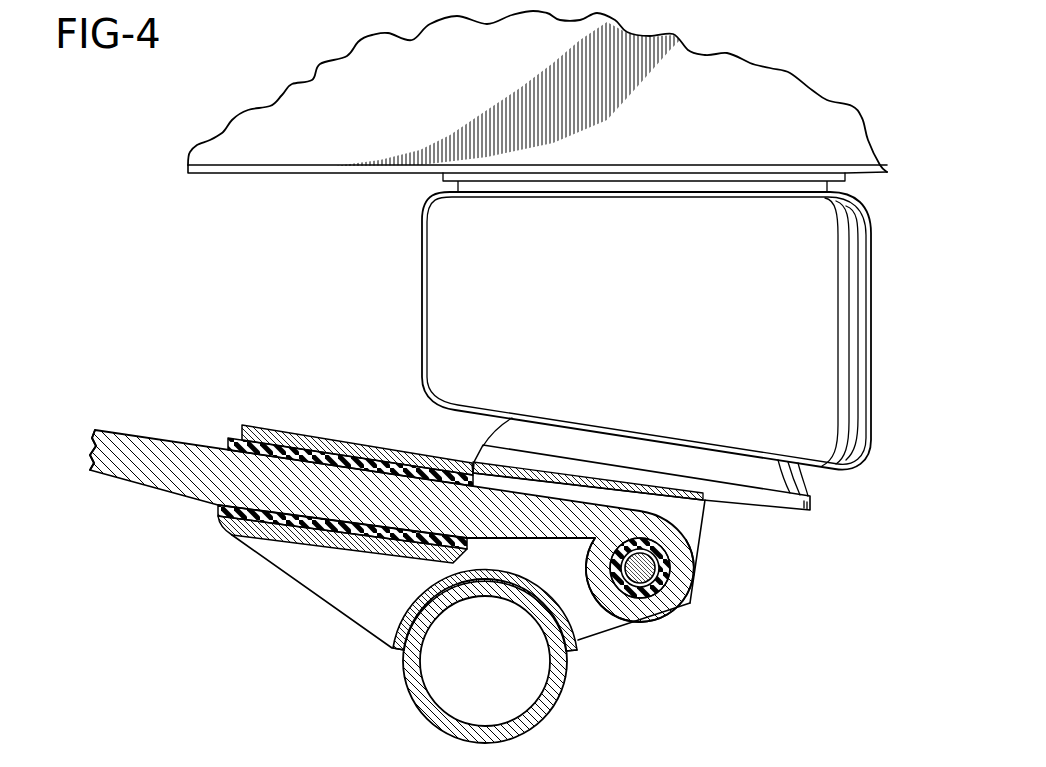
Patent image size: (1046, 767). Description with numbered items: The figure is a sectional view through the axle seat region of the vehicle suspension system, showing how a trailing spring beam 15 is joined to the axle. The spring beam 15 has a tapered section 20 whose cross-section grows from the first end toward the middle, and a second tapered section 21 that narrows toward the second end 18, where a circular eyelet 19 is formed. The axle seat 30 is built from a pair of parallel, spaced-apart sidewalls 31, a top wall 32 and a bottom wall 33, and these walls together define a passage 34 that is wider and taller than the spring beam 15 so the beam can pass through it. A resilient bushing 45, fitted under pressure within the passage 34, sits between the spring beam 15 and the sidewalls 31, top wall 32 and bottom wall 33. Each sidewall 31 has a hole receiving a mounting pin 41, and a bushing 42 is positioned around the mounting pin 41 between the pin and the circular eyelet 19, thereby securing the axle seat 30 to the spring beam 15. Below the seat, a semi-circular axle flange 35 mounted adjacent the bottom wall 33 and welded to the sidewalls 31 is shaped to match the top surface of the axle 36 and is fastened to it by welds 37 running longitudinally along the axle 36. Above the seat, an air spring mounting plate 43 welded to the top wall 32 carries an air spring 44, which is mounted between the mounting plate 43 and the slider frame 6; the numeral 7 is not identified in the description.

The slider frame 6 is at (755, 58).
The cushion base plate 7 is at (822, 100).
The air spring 44 is at (436, 277).
The second tapered section 21 is at (533, 517).
The air spring mounting plate 43 is at (607, 495).
The trailing spring beam 15 is at (451, 524).
The tapered section 20 is at (112, 462).
The circular eyelet 19 is at (671, 607).
The second end 18 is at (700, 600).
The bushing 42 is at (658, 555).
The mounting pin 41 is at (655, 573).
The resilient bushing 45 is at (383, 467).
The top wall 32 is at (262, 428).
The passage 34 is at (257, 515).
The bottom wall 33 is at (334, 548).
The sidewall 31 is at (297, 566).
The axle seat 30 is at (630, 638).
The axle 36 is at (412, 695).
The axle flange 35 is at (583, 645).
The welds 37 is at (396, 655).